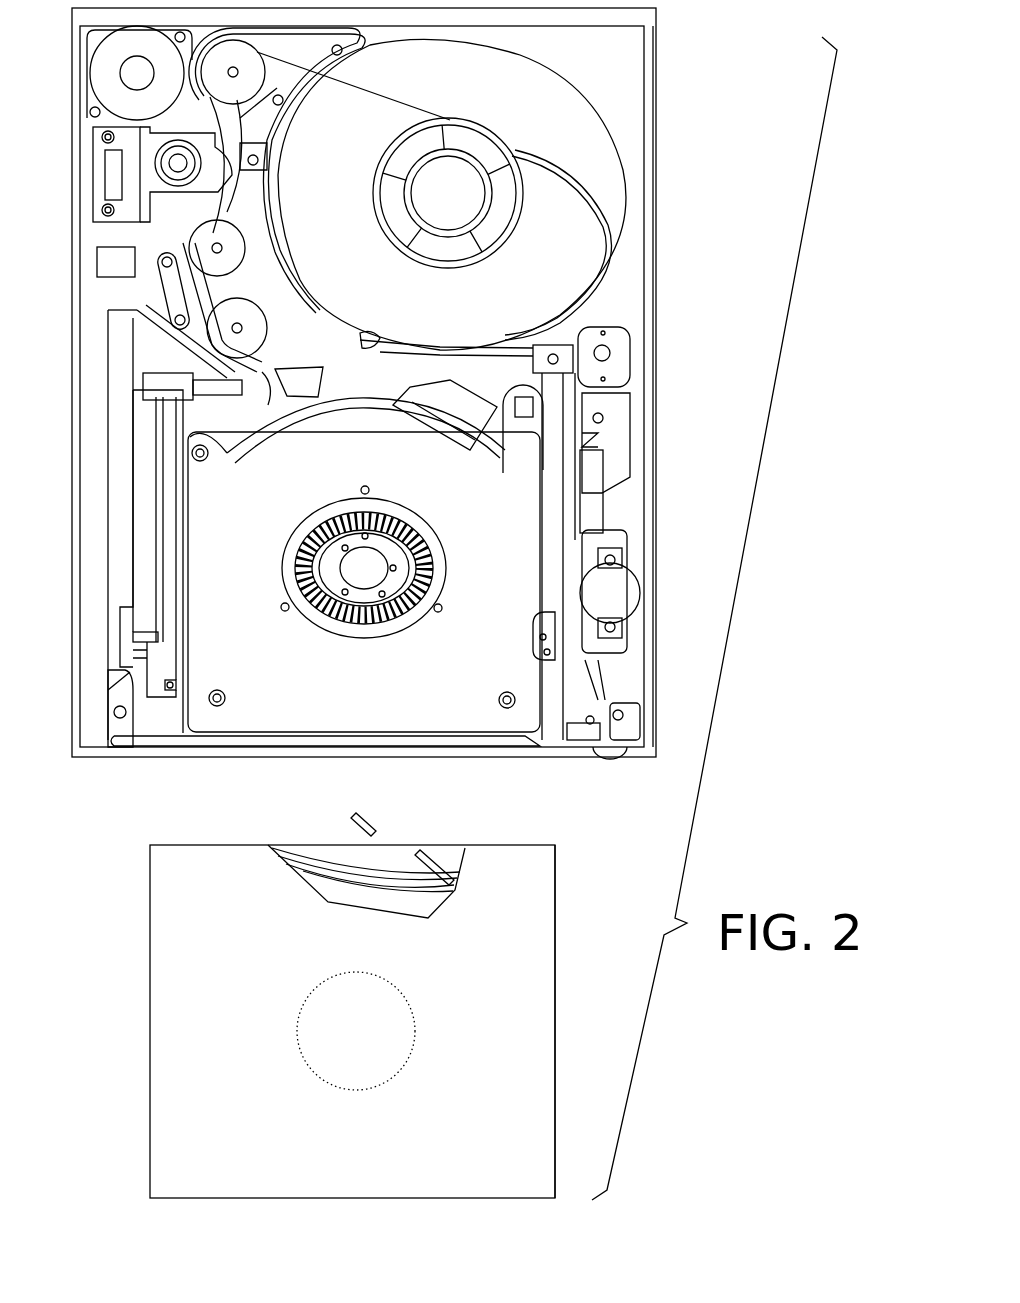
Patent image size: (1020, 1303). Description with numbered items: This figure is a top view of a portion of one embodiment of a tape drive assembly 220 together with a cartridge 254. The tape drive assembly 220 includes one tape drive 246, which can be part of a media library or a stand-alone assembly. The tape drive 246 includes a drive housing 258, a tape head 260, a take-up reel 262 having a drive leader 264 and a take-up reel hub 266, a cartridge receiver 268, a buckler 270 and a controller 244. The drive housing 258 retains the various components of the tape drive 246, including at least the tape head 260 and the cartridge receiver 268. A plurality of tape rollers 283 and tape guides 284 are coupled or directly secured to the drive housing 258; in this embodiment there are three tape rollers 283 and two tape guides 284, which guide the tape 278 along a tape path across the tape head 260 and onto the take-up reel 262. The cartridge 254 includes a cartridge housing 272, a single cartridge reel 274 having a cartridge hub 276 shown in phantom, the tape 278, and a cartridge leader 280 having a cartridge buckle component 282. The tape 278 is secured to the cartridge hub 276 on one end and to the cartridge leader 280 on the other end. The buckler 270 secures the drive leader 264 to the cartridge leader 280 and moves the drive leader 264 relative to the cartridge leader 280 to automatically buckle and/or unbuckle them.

The tape drive assembly 220 is at (663, 438).
The controller 244 is at (105, 267).
The tape drive 246 is at (650, 333).
The cartridge 254 is at (540, 899).
The drive housing 258 is at (647, 222).
The tape head 260 is at (222, 160).
The take-up reel 262 is at (580, 124).
The drive leader 264 is at (266, 400).
The take-up reel hub 266 is at (478, 150).
The cartridge receiver 268 is at (537, 723).
The buckler 270 is at (360, 323).
The cartridge housing 272 is at (557, 960).
The cartridge reel 274 is at (330, 887).
The cartridge hub 276 is at (417, 1030).
The tape 278 is at (440, 865).
The cartridge leader 280 is at (400, 852).
The cartridge buckle component 282 is at (373, 831).
The tape rollers 283 is at (236, 306).
The tape guides 284 is at (200, 335).